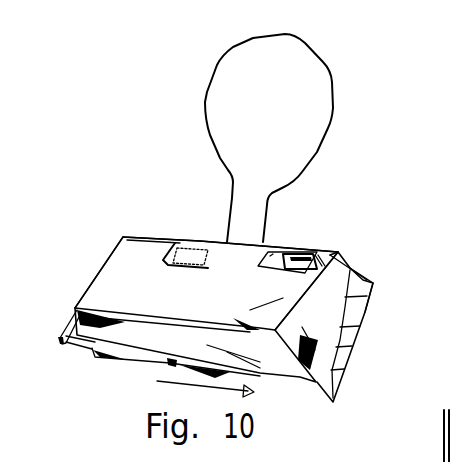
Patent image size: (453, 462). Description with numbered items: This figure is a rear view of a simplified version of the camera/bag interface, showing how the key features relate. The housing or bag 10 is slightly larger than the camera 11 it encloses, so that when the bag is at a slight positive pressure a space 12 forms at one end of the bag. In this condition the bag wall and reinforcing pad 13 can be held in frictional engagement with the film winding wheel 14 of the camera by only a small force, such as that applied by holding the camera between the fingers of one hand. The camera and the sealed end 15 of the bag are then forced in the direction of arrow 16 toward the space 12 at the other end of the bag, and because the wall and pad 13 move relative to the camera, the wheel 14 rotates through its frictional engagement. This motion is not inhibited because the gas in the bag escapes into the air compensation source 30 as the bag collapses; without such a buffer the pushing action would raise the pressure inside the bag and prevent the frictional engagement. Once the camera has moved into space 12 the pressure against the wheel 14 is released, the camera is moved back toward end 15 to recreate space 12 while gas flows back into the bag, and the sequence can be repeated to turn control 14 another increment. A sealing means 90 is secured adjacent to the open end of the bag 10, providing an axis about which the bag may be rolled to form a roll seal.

The housing or bag 10 is at (92, 350).
The camera 11 is at (350, 273).
The space 12 is at (350, 250).
The reinforcing pad 13 is at (283, 245).
The film winding wheel 14 is at (313, 248).
The sealed end 15 is at (97, 283).
The arrow 16 is at (189, 385).
The air compensation source 30 is at (332, 130).
The sealing means 90 is at (60, 340).